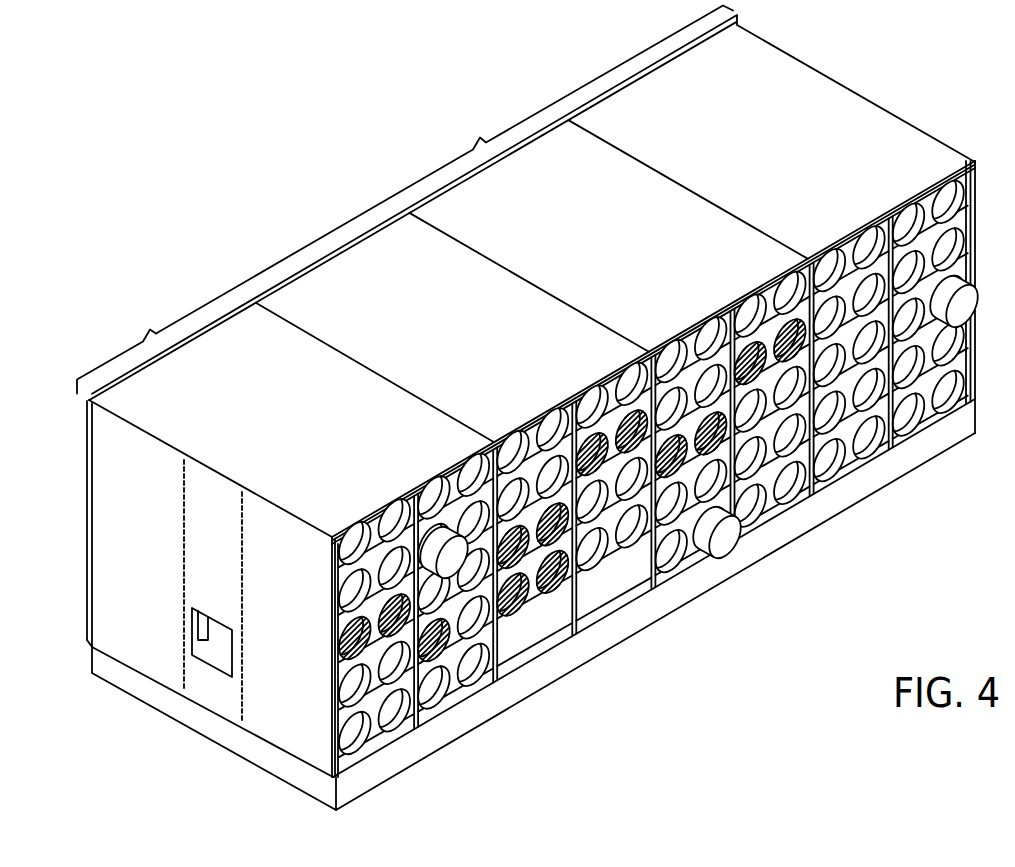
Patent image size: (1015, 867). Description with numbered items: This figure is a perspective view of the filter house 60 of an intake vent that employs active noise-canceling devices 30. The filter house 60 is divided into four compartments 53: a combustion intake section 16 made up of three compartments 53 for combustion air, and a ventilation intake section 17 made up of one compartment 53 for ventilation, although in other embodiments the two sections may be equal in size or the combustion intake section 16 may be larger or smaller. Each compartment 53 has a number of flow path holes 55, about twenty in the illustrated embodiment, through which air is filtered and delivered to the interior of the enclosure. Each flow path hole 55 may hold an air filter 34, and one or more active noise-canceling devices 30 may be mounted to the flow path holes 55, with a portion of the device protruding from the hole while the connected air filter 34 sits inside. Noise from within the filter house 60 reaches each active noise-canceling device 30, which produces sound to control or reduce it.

The filter house 60 is at (360, 68).
The combustion intake section 16 is at (444, 170).
The ventilation intake section 17 is at (117, 345).
The compartment 53 is at (368, 466).
The flow path hole 55 is at (471, 478).
The active noise-canceling device 30 is at (727, 545).
The air filter 34 is at (437, 645).